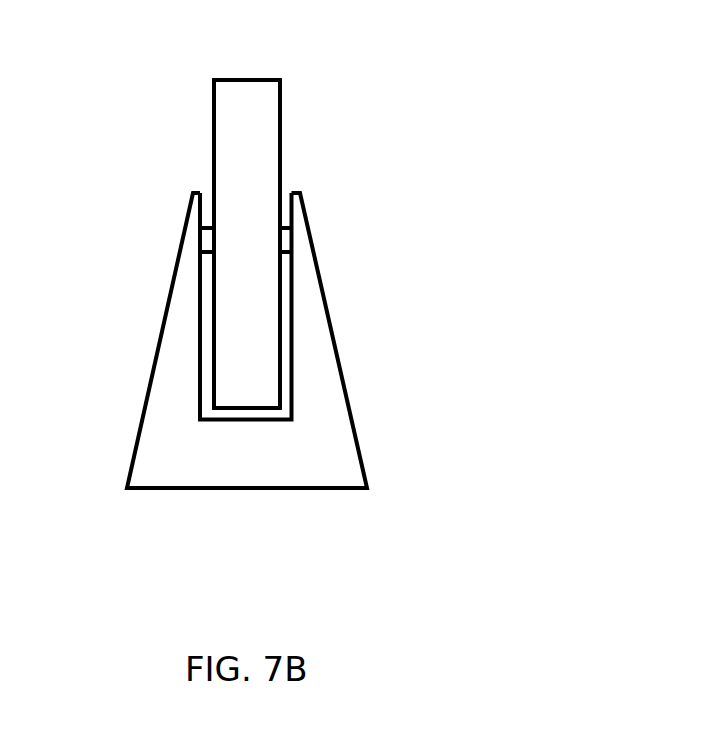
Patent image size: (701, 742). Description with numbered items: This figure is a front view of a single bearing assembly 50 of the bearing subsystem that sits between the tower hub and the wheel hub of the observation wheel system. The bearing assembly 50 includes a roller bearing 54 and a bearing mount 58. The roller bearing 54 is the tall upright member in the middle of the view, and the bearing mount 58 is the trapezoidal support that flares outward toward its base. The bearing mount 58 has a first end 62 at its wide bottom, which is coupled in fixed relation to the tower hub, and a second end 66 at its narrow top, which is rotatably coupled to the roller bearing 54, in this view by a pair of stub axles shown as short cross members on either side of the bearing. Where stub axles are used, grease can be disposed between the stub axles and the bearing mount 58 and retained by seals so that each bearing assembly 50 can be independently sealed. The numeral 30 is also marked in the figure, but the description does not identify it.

The roller bearing 54 is at (212, 137).
The bearing mount 58 is at (337, 350).
The second end 66 is at (187, 228).
The first end 62 is at (145, 492).
The bearing assembly 50 is at (465, 203).
The sensor 30 is at (497, 317).